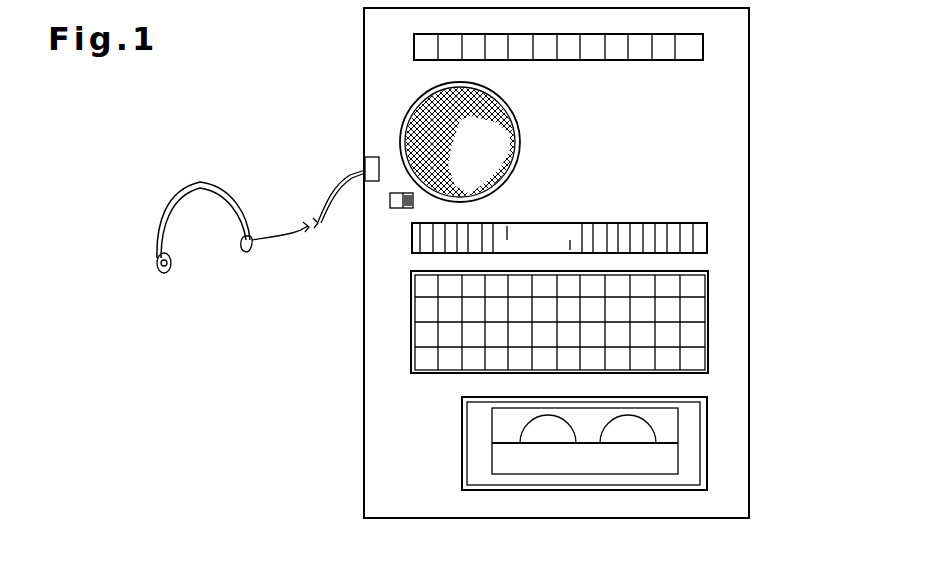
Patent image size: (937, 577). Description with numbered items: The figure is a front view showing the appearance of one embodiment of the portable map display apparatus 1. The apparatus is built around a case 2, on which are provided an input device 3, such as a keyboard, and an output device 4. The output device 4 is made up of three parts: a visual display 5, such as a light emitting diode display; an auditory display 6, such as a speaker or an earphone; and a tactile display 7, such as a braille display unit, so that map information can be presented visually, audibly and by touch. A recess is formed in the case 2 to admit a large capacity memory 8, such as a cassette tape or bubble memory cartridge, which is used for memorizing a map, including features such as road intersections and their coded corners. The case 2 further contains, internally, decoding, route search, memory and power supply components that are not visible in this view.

The portable map display apparatus 1 is at (764, 230).
The case 2 is at (728, 128).
The input device 3 is at (421, 328).
The output device 4 is at (297, 55).
The visual display 5 is at (421, 48).
The auditory display 6 is at (402, 135).
The tactile display 7 is at (418, 239).
The large capacity memory 8 is at (668, 460).